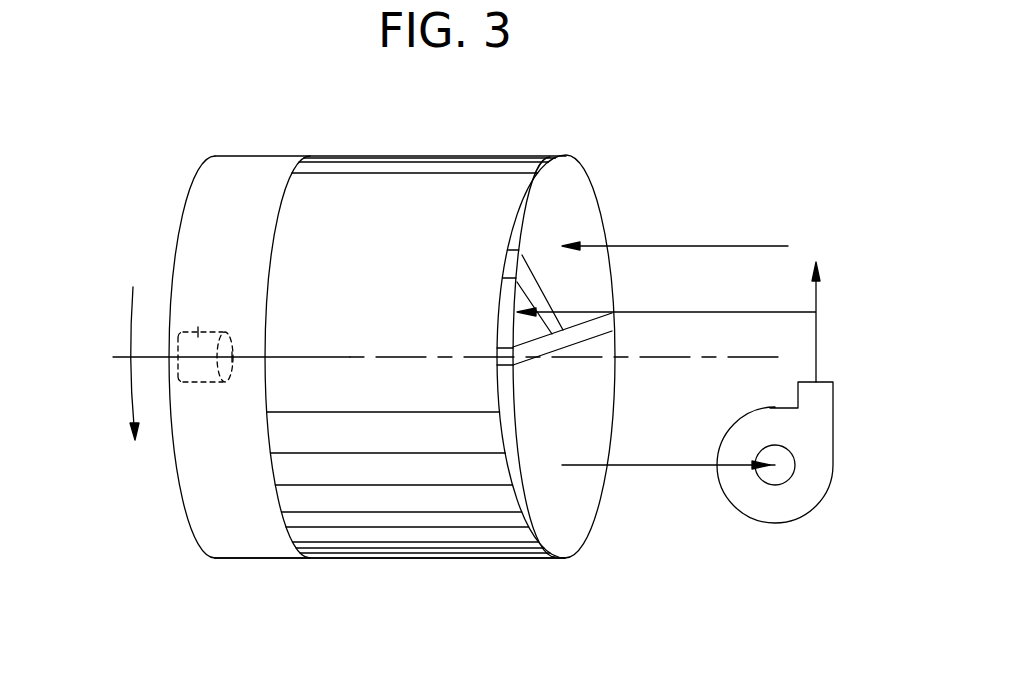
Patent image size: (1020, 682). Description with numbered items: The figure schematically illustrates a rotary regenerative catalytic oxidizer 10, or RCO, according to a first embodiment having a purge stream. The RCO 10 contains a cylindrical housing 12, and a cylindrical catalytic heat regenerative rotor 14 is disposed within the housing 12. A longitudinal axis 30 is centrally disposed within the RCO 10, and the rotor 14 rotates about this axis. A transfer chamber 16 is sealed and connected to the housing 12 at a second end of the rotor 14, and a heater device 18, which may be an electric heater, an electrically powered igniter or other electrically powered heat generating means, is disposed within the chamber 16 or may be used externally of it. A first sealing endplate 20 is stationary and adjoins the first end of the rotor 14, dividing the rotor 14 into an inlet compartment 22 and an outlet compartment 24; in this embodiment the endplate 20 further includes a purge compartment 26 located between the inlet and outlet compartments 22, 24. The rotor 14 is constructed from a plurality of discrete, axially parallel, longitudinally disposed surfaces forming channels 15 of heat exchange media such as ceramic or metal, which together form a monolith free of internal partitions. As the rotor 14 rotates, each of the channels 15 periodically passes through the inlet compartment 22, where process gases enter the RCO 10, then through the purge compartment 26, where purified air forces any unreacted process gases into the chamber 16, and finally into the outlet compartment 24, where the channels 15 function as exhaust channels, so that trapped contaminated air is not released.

The rotary regenerative catalytic oxidizer 10 is at (646, 136).
The cylindrical housing 12 is at (330, 560).
The cylindrical catalytic heat regenerative rotor 14 is at (428, 532).
The channels 15 is at (449, 158).
The transfer chamber 16 is at (212, 516).
The heater device 18 is at (197, 322).
The first sealing endplate 20 is at (604, 321).
The inlet compartment 22 is at (581, 206).
The outlet compartment 24 is at (574, 519).
The purge compartment 26 is at (520, 300).
The longitudinal axis 30 is at (702, 359).